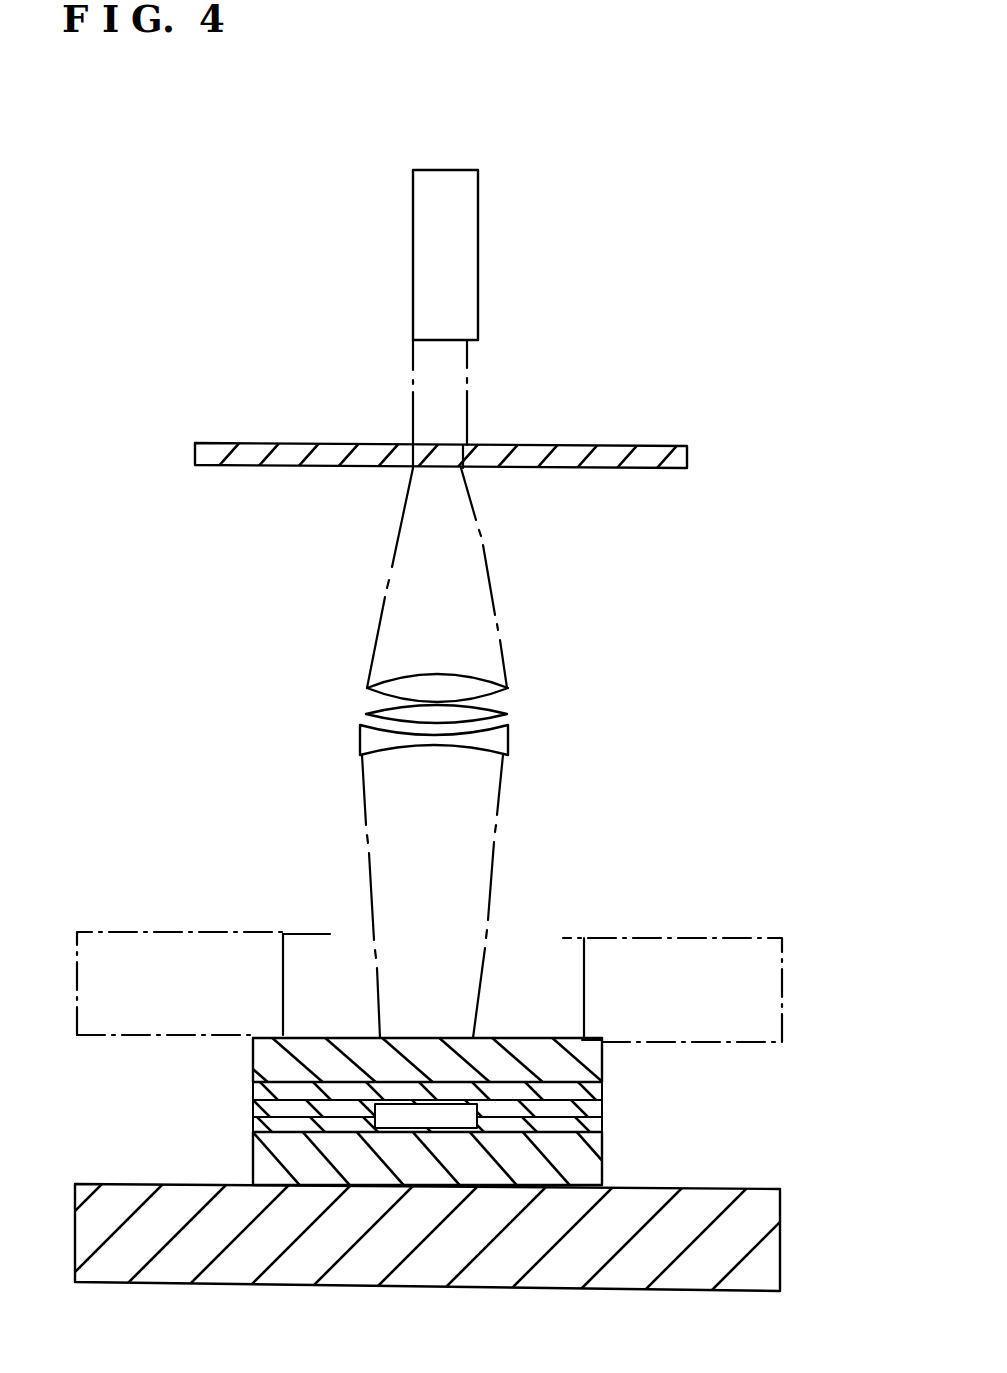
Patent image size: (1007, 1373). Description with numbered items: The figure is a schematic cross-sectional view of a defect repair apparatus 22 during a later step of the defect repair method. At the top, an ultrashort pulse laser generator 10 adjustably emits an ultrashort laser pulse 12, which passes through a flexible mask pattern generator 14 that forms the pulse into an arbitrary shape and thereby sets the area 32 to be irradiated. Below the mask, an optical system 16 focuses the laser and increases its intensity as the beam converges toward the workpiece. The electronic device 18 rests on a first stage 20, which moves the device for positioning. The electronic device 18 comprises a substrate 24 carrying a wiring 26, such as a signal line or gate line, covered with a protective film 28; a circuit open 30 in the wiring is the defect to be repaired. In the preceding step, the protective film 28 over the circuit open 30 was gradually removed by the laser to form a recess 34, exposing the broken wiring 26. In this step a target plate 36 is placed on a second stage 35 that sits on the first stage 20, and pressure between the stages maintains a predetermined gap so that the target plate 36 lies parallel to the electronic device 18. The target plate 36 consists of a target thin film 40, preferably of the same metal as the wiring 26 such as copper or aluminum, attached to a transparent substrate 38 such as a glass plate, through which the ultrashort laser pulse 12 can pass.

The ultrashort pulse laser generator 10 is at (462, 257).
The ultrashort laser pulse 12 is at (455, 375).
The flexible mask pattern generator 14 is at (633, 455).
The optical system 16 is at (550, 718).
The electronic device 18 is at (622, 1093).
The first stage 20 is at (732, 1172).
The defect repair apparatus 22 is at (672, 315).
The substrate 24 is at (583, 1167).
The wiring 26 is at (602, 1124).
The protective film 28 is at (603, 1110).
The circuit open 30 is at (440, 1098).
The area 32 is at (475, 1038).
The recess 34 is at (400, 1085).
The second stage 35 is at (705, 928).
The target plate 36 is at (635, 1025).
The transparent substrate 38 is at (286, 1047).
The target thin film 40 is at (258, 1090).